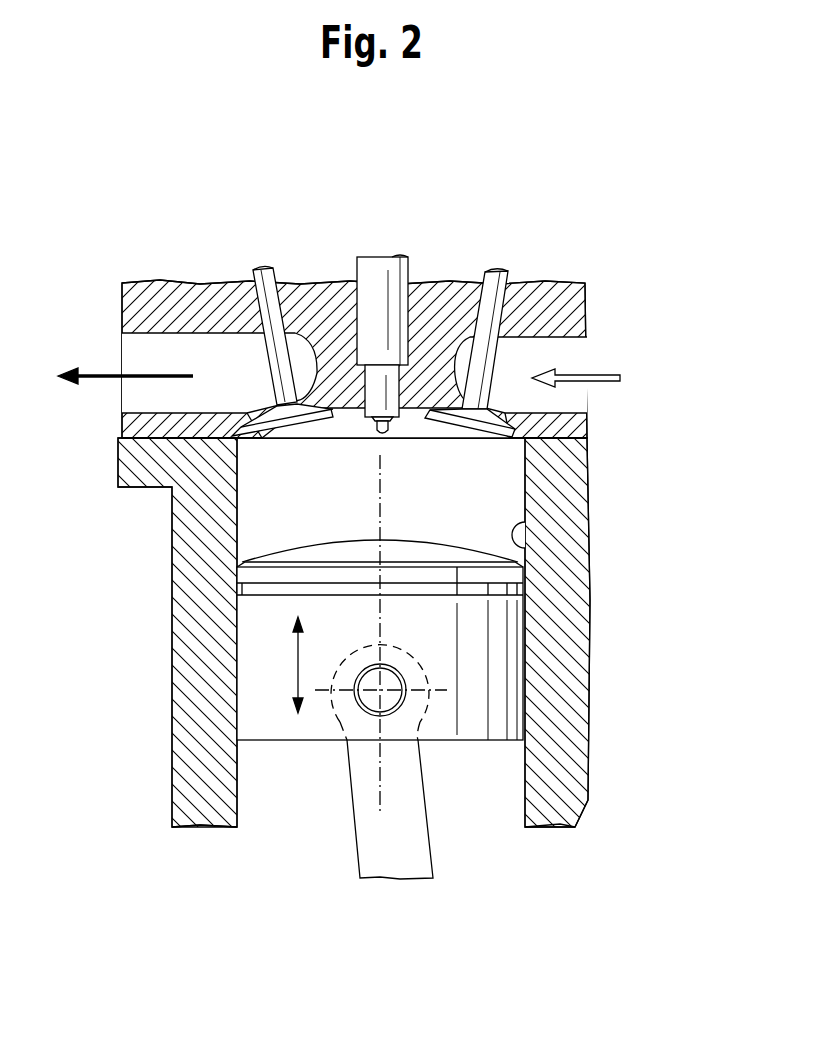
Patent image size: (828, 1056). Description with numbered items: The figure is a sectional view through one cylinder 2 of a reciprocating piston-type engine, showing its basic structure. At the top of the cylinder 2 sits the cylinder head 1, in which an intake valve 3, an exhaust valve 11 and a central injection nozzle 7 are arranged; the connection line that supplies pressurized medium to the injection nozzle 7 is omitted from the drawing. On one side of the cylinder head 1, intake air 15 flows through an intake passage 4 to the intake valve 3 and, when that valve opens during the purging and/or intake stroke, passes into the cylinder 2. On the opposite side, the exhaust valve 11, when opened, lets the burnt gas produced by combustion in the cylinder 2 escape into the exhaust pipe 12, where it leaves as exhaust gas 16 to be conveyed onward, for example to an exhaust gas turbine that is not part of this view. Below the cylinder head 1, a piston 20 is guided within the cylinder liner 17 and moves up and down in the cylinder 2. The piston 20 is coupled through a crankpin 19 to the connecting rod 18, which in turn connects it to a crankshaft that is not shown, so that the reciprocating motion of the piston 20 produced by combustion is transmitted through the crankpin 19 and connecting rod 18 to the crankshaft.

The cylinder head 1 is at (443, 300).
The cylinder 2 is at (307, 498).
The intake valve 3 is at (505, 272).
The intake passage 4 is at (560, 357).
The injection nozzle 7 is at (376, 280).
The exhaust valve 11 is at (262, 283).
The exhaust pipe 12 is at (210, 352).
The intake air 15 is at (607, 382).
The exhaust gas 16 is at (100, 372).
The cylinder liner 17 is at (527, 550).
The connecting rod 18 is at (370, 847).
The crankpin 19 is at (385, 695).
The piston 20 is at (268, 647).